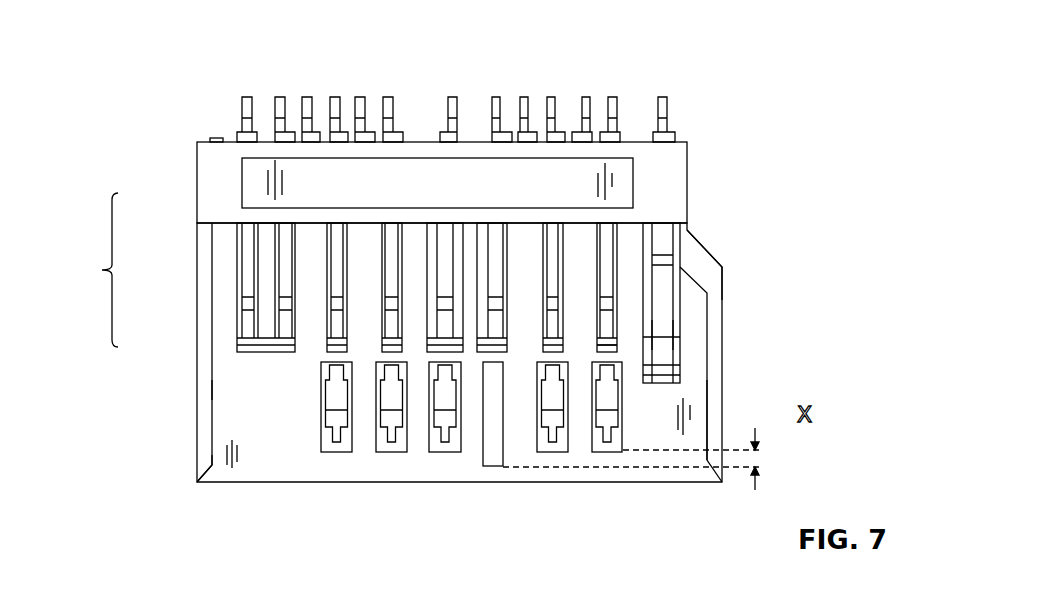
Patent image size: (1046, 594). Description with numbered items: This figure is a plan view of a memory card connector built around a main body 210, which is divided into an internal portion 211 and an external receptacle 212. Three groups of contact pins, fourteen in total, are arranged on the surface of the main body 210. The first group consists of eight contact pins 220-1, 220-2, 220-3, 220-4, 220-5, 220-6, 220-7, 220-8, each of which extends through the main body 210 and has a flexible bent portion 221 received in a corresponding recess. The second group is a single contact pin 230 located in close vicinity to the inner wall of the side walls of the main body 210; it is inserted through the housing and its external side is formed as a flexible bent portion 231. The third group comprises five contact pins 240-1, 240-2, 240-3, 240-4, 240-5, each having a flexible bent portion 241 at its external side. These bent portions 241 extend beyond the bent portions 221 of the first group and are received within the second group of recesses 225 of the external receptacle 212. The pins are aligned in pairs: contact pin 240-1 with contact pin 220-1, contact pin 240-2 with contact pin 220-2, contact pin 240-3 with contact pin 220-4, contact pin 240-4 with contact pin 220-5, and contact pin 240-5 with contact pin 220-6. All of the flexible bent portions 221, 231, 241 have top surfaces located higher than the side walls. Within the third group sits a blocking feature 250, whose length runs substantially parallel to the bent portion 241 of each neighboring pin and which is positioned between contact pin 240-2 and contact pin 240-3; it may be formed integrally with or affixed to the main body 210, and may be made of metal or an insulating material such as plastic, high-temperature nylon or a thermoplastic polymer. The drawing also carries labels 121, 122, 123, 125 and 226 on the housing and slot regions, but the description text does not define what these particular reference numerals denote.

The housing body 121 is at (205, 420).
The chamfered corner portion 122 is at (712, 265).
The side wall 123 is at (714, 391).
The bottom portion of receiving slot 125 is at (677, 365).
The main body 210 is at (85, 270).
The internal portion 211 is at (203, 218).
The external receptacle 212 is at (212, 390).
The contact pin 220-1 is at (607, 250).
The contact pin 220-2 is at (557, 240).
The contact pin 220-3 is at (497, 240).
The contact pin 220-4 is at (445, 240).
The contact pin 220-5 is at (393, 240).
The contact pin 220-6 is at (336, 267).
The contact pin 220-7 is at (285, 280).
The contact pin 220-8 is at (249, 253).
The flexible bent portion 221 is at (338, 307).
The second group of recesses 225 is at (195, 452).
The slot bottom 226 is at (607, 347).
The contact pin 230 is at (667, 273).
The flexible bent portion 231 is at (665, 343).
The contact pin 240-1 is at (607, 445).
The contact pin 240-2 is at (552, 445).
The contact pin 240-3 is at (445, 443).
The contact pin 240-4 is at (392, 444).
The contact pin 240-5 is at (337, 443).
The flexible bent portion 241 is at (338, 418).
The blocking feature 250 is at (493, 453).